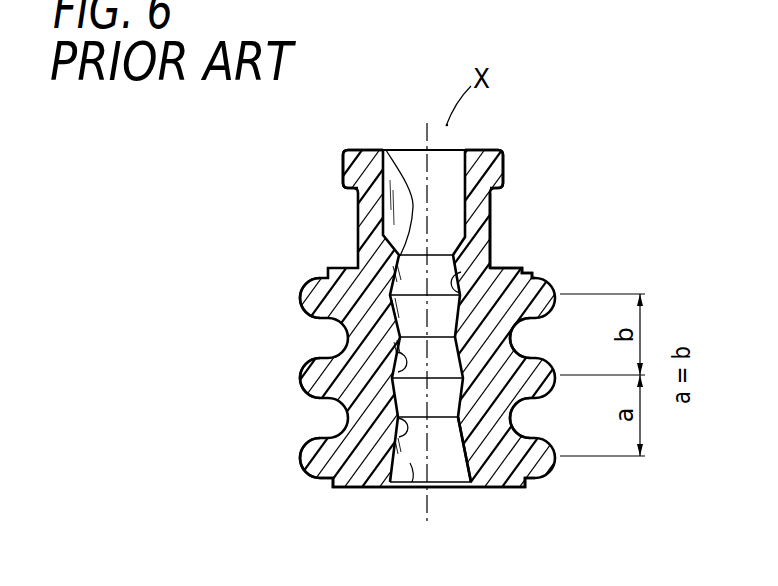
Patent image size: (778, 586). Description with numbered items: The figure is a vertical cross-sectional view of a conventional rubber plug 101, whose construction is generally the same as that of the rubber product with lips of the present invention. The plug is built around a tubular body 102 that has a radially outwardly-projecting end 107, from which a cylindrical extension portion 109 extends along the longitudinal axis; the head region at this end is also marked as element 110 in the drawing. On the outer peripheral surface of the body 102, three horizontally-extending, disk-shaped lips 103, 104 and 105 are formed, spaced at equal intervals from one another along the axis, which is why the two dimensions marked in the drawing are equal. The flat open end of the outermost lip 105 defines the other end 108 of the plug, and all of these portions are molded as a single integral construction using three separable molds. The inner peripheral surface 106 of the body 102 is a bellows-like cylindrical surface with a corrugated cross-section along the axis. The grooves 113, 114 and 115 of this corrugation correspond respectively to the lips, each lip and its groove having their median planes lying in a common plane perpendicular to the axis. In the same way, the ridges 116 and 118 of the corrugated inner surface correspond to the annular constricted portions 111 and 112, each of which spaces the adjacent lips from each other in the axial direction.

The rubber plug 101 is at (558, 252).
The tubular body 102 is at (527, 480).
The lip 103 is at (302, 280).
The lip 104 is at (300, 375).
The outermost lip 105 is at (313, 462).
The inner peripheral surface 106 is at (413, 482).
The radially outwardly-projecting end 107 is at (488, 150).
The other end 108 is at (362, 488).
The cylindrical extension portion 109 is at (488, 219).
The head 110 is at (343, 167).
The annular constricted portion 111 is at (520, 337).
The annular constricted portion 112 is at (515, 420).
The groove 113 is at (488, 262).
The groove 114 is at (396, 358).
The groove 115 is at (463, 488).
The ridge 116 is at (386, 150).
The ridge 118 is at (397, 425).